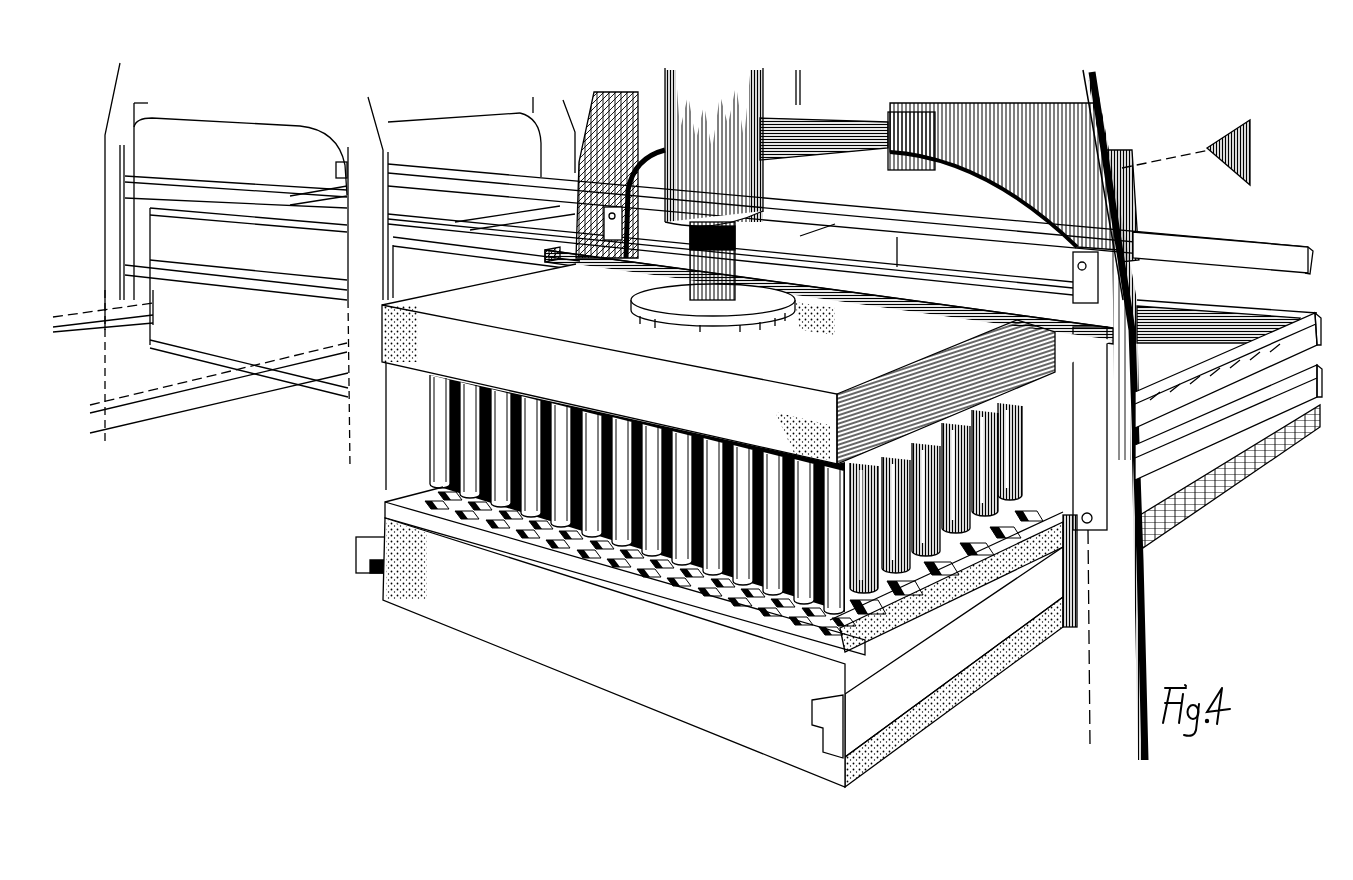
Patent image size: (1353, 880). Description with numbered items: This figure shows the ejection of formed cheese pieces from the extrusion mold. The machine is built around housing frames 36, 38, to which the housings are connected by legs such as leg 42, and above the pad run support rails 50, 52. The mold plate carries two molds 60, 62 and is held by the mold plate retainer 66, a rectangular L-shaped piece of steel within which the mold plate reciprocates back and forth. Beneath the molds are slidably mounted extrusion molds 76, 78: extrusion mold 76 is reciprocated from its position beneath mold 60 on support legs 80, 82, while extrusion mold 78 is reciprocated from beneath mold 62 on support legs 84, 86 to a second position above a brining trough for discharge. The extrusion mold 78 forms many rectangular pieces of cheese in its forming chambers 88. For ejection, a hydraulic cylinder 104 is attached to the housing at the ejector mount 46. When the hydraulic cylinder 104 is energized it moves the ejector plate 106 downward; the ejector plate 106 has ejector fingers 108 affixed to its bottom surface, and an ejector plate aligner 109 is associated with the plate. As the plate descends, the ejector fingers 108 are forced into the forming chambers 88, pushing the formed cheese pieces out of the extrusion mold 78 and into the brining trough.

The housing frame 36 is at (137, 300).
The housing frame 38 is at (838, 277).
The leg 42 is at (1130, 412).
The ejector mount 46 is at (703, 167).
The support rail 50 is at (236, 358).
The support rail 52 is at (1143, 232).
The mold 60 is at (248, 374).
The mold 62 is at (694, 402).
The mold plate retainer 66 is at (1208, 308).
The extrusion mold 76 is at (236, 400).
The extrusion mold 78 is at (1168, 315).
The support leg 80 is at (57, 332).
The support leg 82 is at (217, 441).
The support leg 84 is at (707, 410).
The support leg 86 is at (1228, 246).
The forming chambers 88 is at (587, 607).
The hydraulic cylinder 104 is at (847, 117).
The ejector plate 106 is at (773, 228).
The ejector fingers 108 is at (615, 524).
The ejector plate aligner 109 is at (623, 246).